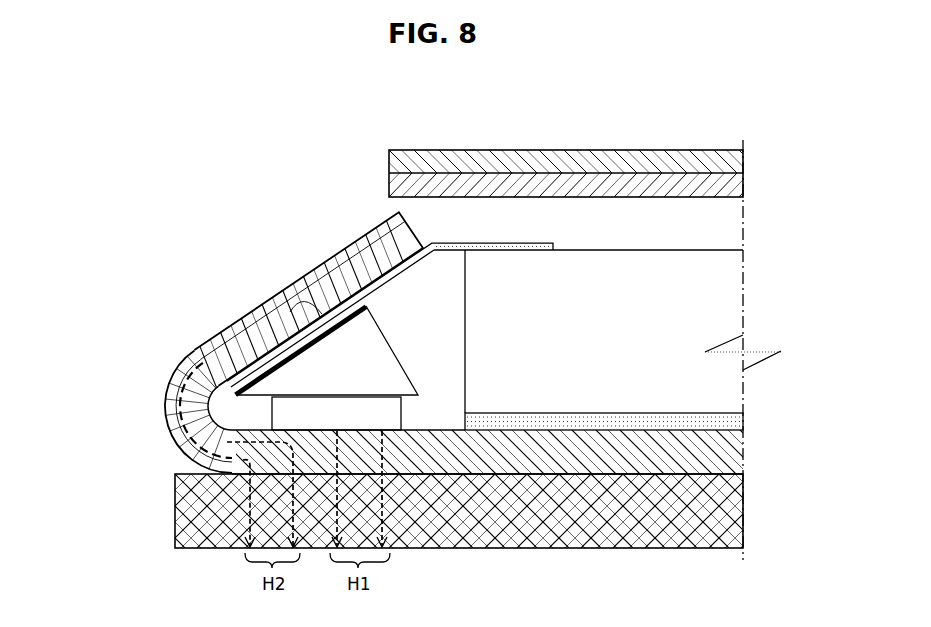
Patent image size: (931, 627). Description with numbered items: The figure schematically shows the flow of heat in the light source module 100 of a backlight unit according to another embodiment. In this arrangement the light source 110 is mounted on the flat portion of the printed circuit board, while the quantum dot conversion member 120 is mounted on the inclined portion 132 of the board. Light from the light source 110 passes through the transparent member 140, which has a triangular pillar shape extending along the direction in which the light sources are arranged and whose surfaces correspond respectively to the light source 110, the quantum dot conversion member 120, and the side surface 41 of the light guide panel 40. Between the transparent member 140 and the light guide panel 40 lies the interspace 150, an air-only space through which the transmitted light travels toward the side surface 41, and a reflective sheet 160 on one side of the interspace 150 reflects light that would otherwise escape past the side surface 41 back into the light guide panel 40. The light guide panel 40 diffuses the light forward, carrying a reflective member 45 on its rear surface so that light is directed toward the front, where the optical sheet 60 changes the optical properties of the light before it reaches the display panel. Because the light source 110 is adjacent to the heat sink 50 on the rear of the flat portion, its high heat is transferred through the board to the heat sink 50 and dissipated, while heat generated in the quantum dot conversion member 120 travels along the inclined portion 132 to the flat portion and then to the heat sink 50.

The light source module 100 is at (422, 354).
The light source 110 is at (215, 473).
The quantum dot conversion member 120 is at (218, 371).
The inclined portion 132 is at (214, 343).
The transparent member 140 is at (418, 395).
The interspace 150 is at (366, 246).
The reflective sheet 160 is at (433, 242).
The light guide panel 40 is at (617, 338).
The side surface 41 is at (465, 283).
The reflective member 45 is at (743, 422).
The heat sink 50 is at (743, 508).
The optical sheet 60 is at (745, 186).